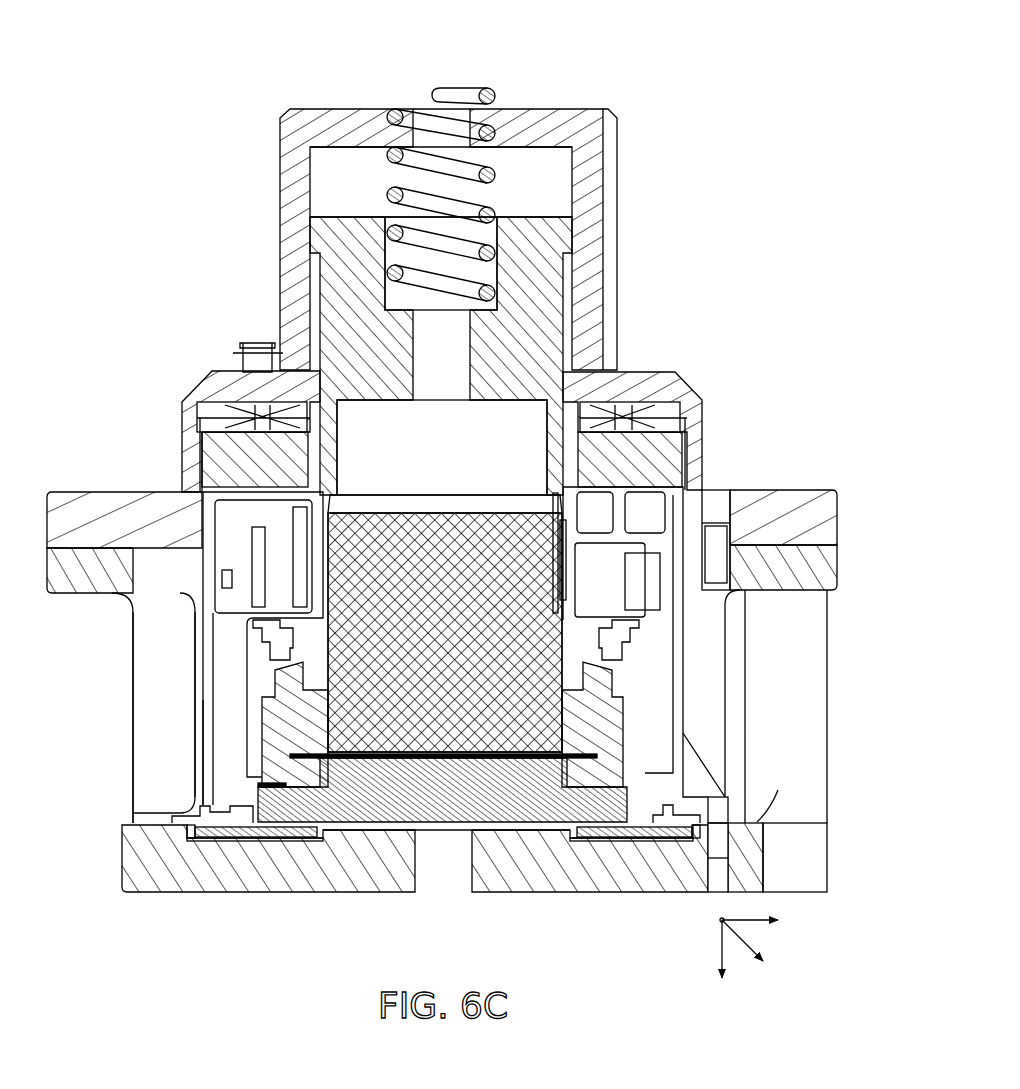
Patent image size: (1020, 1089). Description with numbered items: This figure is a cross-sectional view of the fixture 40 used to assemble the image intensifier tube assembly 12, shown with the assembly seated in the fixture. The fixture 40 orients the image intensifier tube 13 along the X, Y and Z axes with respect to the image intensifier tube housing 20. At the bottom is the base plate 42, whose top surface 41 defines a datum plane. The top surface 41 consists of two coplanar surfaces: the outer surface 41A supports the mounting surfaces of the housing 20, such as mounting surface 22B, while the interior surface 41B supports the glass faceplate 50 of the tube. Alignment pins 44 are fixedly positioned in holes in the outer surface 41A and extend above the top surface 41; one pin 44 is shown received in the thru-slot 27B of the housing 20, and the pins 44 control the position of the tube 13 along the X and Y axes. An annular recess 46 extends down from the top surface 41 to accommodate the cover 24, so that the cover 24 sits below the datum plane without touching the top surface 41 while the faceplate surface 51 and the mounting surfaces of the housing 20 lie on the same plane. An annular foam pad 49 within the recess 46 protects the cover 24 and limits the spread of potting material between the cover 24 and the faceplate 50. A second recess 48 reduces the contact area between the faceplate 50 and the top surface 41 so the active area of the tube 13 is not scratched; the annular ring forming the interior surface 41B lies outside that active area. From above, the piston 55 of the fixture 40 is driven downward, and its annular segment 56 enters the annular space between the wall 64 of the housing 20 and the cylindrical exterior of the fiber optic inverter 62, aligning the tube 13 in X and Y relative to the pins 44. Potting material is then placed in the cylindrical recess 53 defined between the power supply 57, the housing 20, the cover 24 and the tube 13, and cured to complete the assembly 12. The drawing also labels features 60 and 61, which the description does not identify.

The fixture 40 is at (442, 525).
The piston 55 is at (548, 313).
The annular segment 56 is at (338, 470).
The thin plate 60 is at (322, 750).
The image intensifier tube 13 is at (445, 518).
The fiber optic inverter 62 is at (553, 540).
The wall 64 is at (568, 597).
The power supply 57 is at (652, 518).
The cylindrical recess 53 is at (262, 648).
The image intensifier tube housing 20 is at (683, 657).
The image intensifier tube assembly 12 is at (432, 643).
The faceplate 50 is at (431, 804).
The mounting surface 22B is at (740, 803).
The top surface 41 is at (130, 823).
The outer surface 41A is at (152, 823).
The interior surface 41B is at (315, 800).
The thru-slot 27B is at (765, 830).
The alignment pins 44 is at (720, 848).
The cover 24 is at (200, 830).
The foam pad 49 is at (248, 840).
The annular recess 46 is at (272, 838).
The plate edge 61 is at (357, 790).
The second recess 48 is at (385, 790).
The faceplate surface 51 is at (540, 838).
The base plate 42 is at (628, 893).